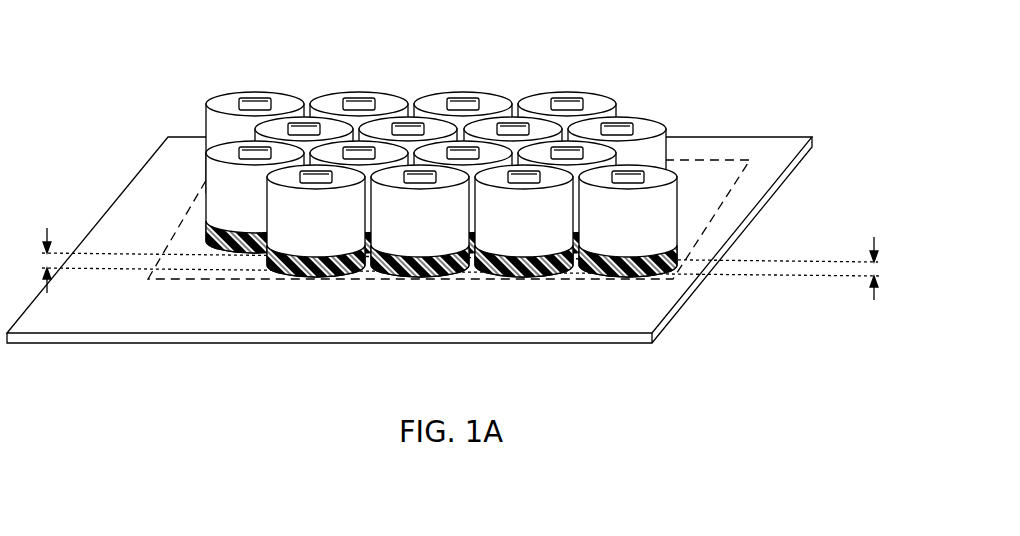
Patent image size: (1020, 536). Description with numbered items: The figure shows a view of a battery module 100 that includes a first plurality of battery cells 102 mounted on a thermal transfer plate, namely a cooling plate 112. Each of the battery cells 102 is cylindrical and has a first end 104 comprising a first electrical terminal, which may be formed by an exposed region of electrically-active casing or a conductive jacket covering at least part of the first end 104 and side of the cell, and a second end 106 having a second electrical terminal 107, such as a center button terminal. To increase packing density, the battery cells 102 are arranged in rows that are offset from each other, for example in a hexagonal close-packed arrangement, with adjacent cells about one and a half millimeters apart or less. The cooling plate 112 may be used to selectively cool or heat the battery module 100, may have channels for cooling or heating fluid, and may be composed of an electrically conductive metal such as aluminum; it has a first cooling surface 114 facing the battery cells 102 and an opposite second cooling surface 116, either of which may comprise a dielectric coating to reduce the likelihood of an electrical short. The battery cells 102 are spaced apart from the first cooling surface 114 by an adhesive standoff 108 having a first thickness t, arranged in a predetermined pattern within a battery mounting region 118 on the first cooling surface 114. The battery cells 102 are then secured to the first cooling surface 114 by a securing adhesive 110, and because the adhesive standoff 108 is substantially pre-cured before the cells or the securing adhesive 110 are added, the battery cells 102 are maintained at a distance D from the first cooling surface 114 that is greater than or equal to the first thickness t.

The battery module 100 is at (430, 47).
The battery cells 102 is at (194, 113).
The first end 104 is at (207, 232).
The second end 106 is at (212, 101).
The second electrical terminal 107 is at (256, 95).
The adhesive standoff 108 is at (670, 256).
The securing adhesive 110 is at (314, 278).
The cooling plate 112 is at (465, 221).
The first cooling surface 114 is at (775, 152).
The second cooling surface 116 is at (798, 194).
The battery mounting region 118 is at (467, 282).